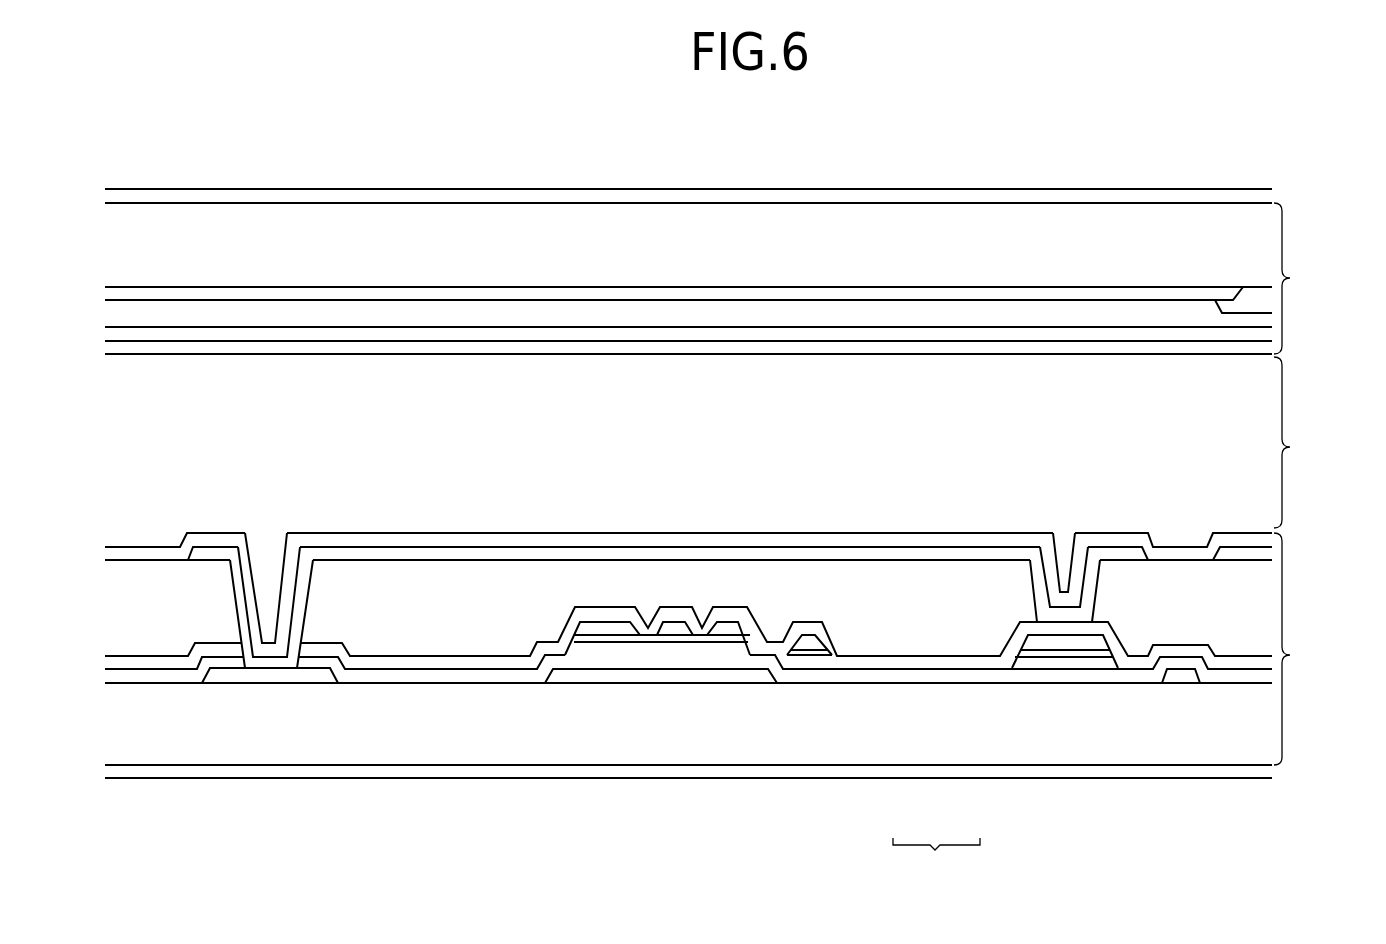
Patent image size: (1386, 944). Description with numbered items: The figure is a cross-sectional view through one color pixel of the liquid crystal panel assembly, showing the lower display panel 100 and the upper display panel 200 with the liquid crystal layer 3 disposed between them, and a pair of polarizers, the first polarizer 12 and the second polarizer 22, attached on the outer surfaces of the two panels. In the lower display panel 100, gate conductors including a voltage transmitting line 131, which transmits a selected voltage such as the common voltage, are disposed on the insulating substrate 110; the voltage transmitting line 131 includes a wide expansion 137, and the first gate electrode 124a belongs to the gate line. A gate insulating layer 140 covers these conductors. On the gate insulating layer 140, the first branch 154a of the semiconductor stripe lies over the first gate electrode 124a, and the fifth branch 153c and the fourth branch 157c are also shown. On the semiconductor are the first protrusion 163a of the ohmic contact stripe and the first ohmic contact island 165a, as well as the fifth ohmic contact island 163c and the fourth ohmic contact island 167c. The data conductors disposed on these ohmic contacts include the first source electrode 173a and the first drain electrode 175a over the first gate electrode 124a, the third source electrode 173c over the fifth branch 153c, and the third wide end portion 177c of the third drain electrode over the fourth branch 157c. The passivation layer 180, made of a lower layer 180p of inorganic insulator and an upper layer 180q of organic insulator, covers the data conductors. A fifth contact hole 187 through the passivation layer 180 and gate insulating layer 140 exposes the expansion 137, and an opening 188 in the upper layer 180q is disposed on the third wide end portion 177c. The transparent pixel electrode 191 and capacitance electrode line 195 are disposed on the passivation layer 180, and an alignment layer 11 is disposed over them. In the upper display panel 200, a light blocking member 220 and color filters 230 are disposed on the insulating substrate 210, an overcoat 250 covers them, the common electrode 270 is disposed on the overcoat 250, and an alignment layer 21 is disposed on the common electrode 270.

The second polarizer 22 is at (1257, 195).
The upper display panel 200 is at (1305, 278).
The insulating substrate 210 is at (720, 234).
The light blocking member 220 is at (978, 294).
The color filter 230 is at (1252, 304).
The overcoat 250 is at (573, 318).
The common electrode 270 is at (843, 334).
The alignment layer 21 is at (1015, 347).
The liquid crystal layer 3 is at (1295, 442).
The lower display panel 100 is at (1306, 649).
The first polarizer 12 is at (1257, 772).
The insulating substrate 110 is at (169, 742).
The expansion 137 is at (253, 677).
The gate insulating layer 140 is at (387, 675).
The first gate electrode 124a is at (692, 677).
The first branch 154a is at (615, 648).
The first protrusion 163a is at (588, 639).
The first ohmic contact island 165a is at (670, 640).
The first source electrode 173a is at (597, 627).
The first drain electrode 175a is at (675, 628).
The third source electrode 173c is at (813, 633).
The fifth ohmic contact island 163c is at (810, 648).
The fifth branch 153c is at (798, 660).
The third wide end portion 177c is at (1087, 642).
The fourth ohmic contact island 167c is at (1065, 652).
The fourth branch 157c is at (1038, 662).
The voltage transmitting line 131 is at (1184, 677).
The lower layer 180p is at (915, 663).
The upper layer 180q is at (942, 628).
The passivation layer 180 is at (936, 862).
The pixel electrode 191 is at (1238, 553).
The capacitance electrode line 195 is at (454, 548).
The alignment layer 11 is at (917, 542).
The fifth contact hole 187 is at (233, 597).
The opening 188 is at (1035, 583).